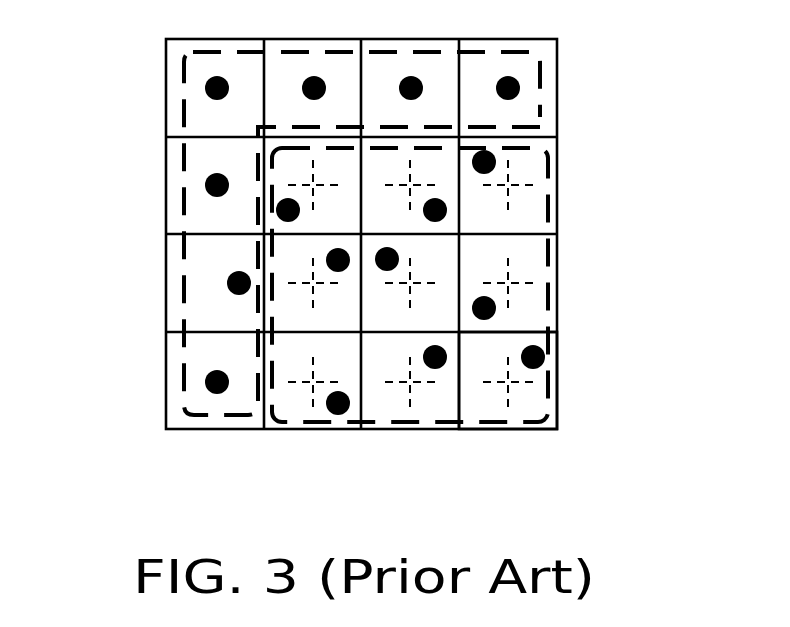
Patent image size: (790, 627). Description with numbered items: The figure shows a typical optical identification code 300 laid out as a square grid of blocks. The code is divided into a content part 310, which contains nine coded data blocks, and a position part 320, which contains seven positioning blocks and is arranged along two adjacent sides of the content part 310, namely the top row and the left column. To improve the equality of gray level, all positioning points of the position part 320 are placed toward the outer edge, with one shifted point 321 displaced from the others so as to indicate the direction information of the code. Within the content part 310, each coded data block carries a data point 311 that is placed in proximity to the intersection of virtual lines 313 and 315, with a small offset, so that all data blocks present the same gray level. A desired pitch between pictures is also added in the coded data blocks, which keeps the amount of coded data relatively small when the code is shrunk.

The optical identification code 300 is at (93, 80).
The content part 310 is at (548, 158).
The data points 311 is at (387, 259).
The virtual line 313 is at (488, 383).
The virtual line 315 is at (508, 402).
The position part 320 is at (540, 95).
The shifted point 321 is at (239, 283).